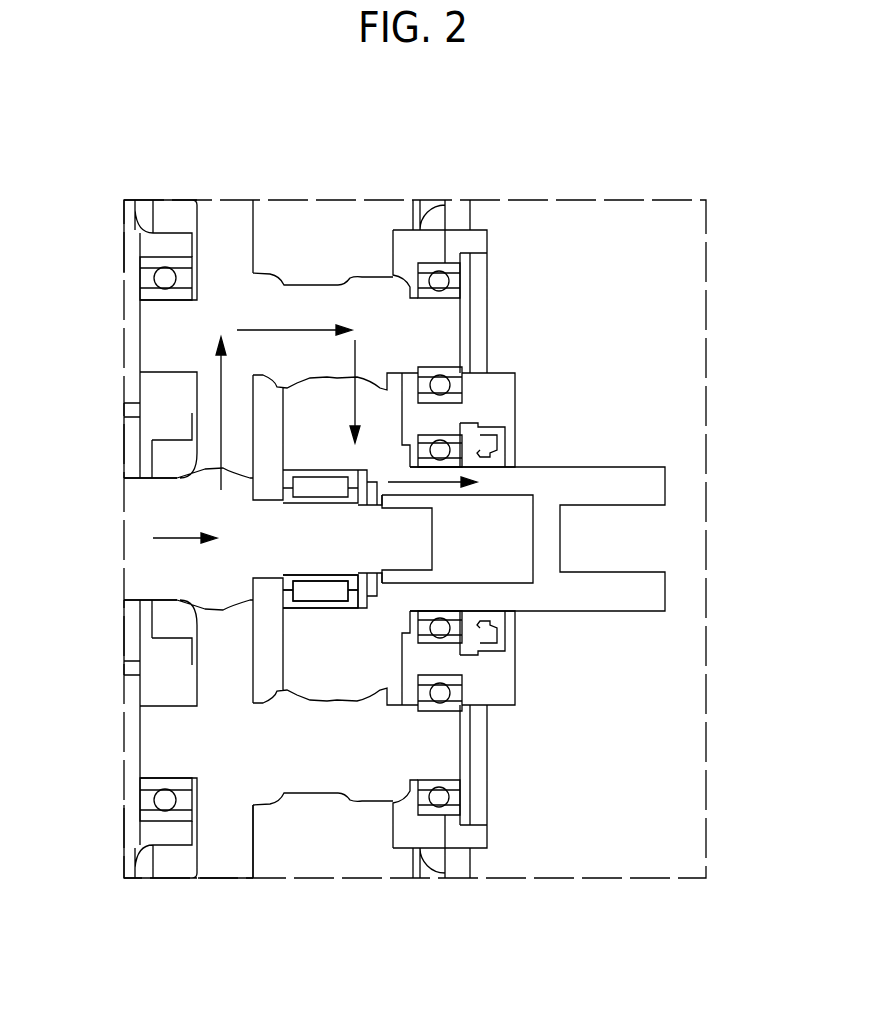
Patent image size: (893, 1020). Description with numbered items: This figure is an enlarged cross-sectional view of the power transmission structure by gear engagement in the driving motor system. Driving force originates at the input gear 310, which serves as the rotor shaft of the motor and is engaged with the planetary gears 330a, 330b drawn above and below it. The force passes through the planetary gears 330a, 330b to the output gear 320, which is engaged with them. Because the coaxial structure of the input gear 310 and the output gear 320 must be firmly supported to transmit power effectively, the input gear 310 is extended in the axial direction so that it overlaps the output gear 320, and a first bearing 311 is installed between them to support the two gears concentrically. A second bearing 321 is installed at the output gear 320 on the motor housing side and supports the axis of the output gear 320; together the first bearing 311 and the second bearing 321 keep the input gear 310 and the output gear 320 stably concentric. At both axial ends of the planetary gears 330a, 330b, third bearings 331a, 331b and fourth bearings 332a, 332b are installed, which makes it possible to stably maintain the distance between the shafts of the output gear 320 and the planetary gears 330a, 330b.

The input gear 310 is at (168, 517).
The first bearing 311 is at (327, 592).
The output gear 320 is at (547, 543).
The second bearing 321 is at (442, 449).
The planetary gear 330a is at (232, 832).
The planetary gear 330b is at (229, 256).
The third bearing 331a is at (440, 797).
The third bearing 331b is at (440, 281).
The fourth bearing 332a is at (165, 686).
The fourth bearing 332b is at (163, 279).